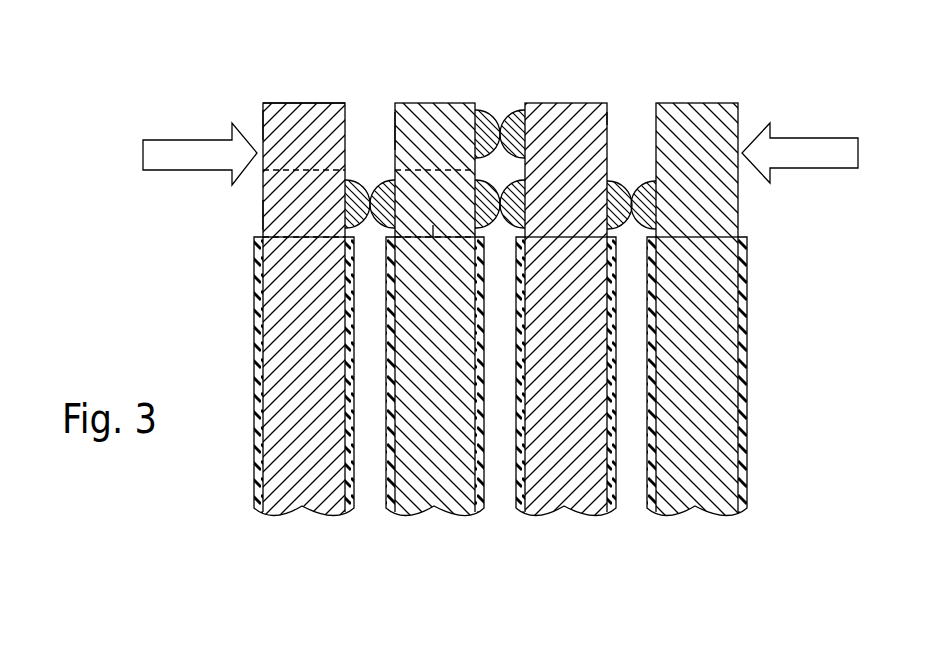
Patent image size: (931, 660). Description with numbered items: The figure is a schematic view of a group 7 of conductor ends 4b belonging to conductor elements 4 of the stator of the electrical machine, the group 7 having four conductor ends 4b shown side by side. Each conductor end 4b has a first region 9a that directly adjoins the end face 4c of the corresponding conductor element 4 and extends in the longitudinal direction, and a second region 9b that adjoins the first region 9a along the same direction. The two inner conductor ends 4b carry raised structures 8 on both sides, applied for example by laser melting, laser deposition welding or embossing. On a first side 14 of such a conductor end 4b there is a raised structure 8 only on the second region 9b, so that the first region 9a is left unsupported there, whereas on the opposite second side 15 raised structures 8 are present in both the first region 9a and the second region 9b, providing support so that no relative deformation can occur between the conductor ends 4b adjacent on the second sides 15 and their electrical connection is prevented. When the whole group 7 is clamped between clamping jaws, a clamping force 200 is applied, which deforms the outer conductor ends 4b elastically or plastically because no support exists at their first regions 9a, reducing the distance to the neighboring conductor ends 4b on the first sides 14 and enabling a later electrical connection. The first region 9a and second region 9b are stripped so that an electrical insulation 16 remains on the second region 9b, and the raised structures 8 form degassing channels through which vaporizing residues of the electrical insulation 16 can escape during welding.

The group 7 is at (195, 45).
The conductor element 4 is at (307, 517).
The conductor end 4b is at (299, 117).
The end face 4c is at (275, 103).
The raised structure 8 is at (476, 205).
The first region 9a is at (263, 125).
The second region 9b is at (433, 232).
The first side 14 is at (393, 118).
The second side 15 is at (518, 110).
The electrical insulation 16 is at (353, 475).
The clamping force 200 is at (160, 152).